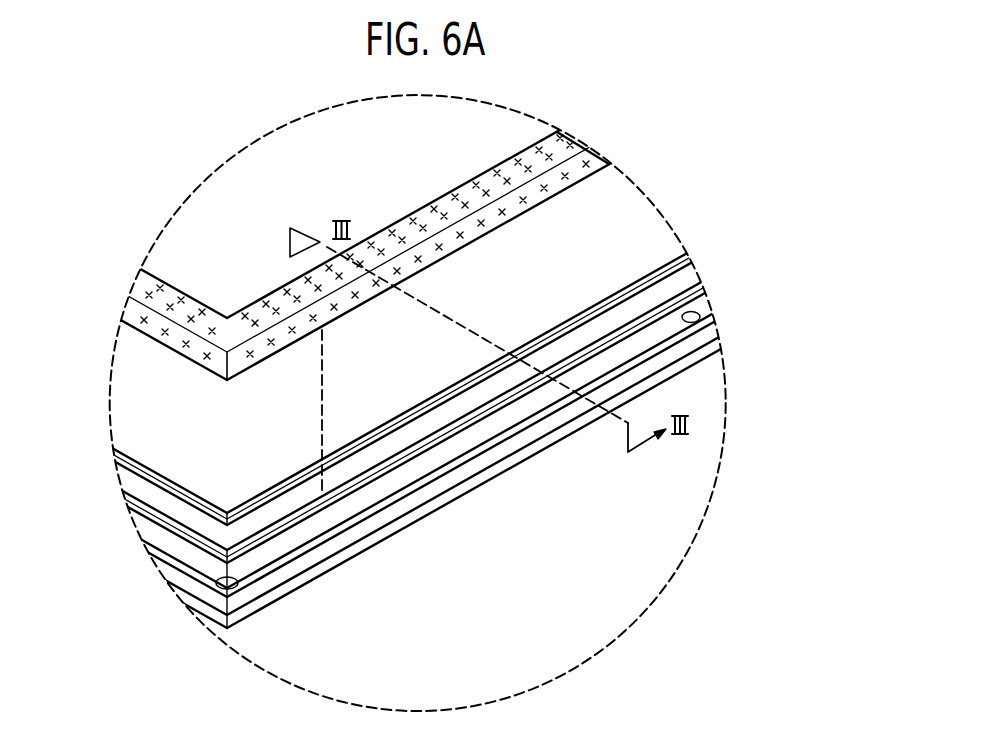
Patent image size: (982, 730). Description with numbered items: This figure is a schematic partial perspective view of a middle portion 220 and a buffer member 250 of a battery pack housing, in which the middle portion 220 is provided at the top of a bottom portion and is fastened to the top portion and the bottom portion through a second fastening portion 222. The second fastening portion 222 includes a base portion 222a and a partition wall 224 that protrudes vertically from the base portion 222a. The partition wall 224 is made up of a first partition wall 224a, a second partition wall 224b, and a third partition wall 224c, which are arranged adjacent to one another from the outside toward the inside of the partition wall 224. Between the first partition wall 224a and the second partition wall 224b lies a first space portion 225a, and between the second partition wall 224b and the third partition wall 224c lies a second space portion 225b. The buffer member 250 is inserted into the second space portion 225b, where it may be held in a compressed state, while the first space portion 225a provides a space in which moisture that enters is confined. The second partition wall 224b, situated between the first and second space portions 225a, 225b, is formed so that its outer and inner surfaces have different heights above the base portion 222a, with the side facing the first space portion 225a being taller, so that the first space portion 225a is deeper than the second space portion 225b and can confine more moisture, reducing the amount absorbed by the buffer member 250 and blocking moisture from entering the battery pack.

The middle portion 220 is at (449, 439).
The second fastening portion 222 is at (574, 549).
The base portion 222a is at (458, 449).
The partition wall 224 is at (484, 560).
The first partition wall 224a is at (347, 521).
The second partition wall 224b is at (373, 473).
The third partition wall 224c is at (395, 418).
The first space portion 225a is at (642, 346).
The second space portion 225b is at (658, 303).
The buffer member 250 is at (148, 326).